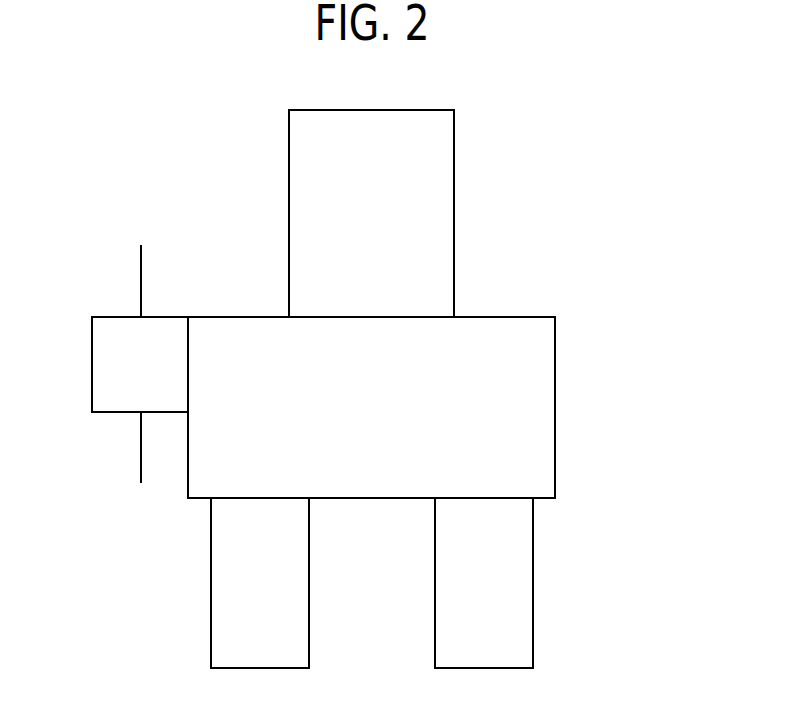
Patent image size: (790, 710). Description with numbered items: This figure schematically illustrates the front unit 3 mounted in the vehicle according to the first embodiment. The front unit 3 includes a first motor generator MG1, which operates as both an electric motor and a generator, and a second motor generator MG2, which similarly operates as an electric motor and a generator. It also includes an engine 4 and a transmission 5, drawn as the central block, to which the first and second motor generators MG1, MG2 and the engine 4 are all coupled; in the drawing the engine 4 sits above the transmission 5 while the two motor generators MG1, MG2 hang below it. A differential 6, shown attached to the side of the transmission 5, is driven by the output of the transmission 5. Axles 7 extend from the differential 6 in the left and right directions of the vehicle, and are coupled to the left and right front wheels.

The front unit 3 is at (540, 262).
The engine 4 is at (454, 137).
The transmission 5 is at (556, 368).
The differential 6 is at (92, 352).
The axles 7 is at (141, 268).
The first motor generator MG1 is at (211, 577).
The second motor generator MG2 is at (533, 577).